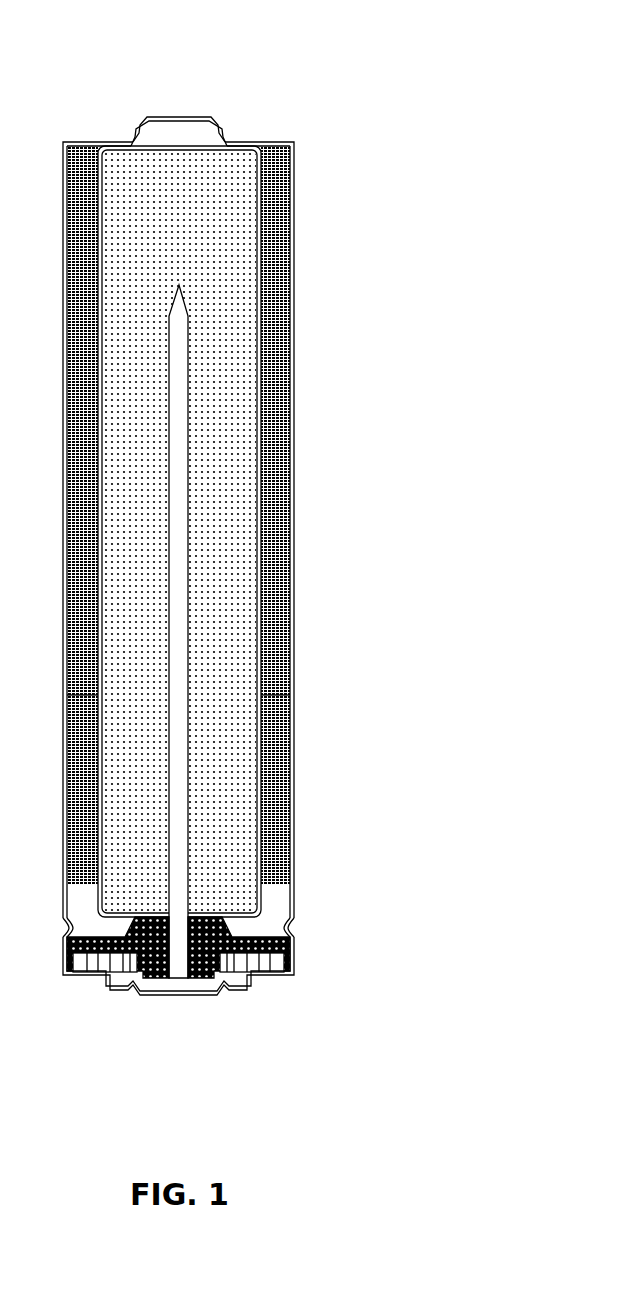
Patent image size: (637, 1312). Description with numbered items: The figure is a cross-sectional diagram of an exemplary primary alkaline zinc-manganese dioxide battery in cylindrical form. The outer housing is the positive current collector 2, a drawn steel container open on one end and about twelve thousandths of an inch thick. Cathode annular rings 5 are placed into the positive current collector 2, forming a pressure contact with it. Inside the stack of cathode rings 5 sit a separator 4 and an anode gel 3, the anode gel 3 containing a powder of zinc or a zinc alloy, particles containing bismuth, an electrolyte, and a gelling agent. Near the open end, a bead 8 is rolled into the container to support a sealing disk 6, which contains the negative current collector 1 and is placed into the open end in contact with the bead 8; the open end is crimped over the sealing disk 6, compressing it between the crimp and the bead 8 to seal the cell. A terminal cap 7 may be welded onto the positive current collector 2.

The negative current collector 1 is at (190, 395).
The positive current collector 2 is at (297, 253).
The anode gel 3 is at (218, 525).
The separator 4 is at (262, 668).
The cathode annular rings 5 is at (275, 805).
The sealing disk 6 is at (218, 958).
The terminal cap 7 is at (225, 127).
The bead 8 is at (292, 925).